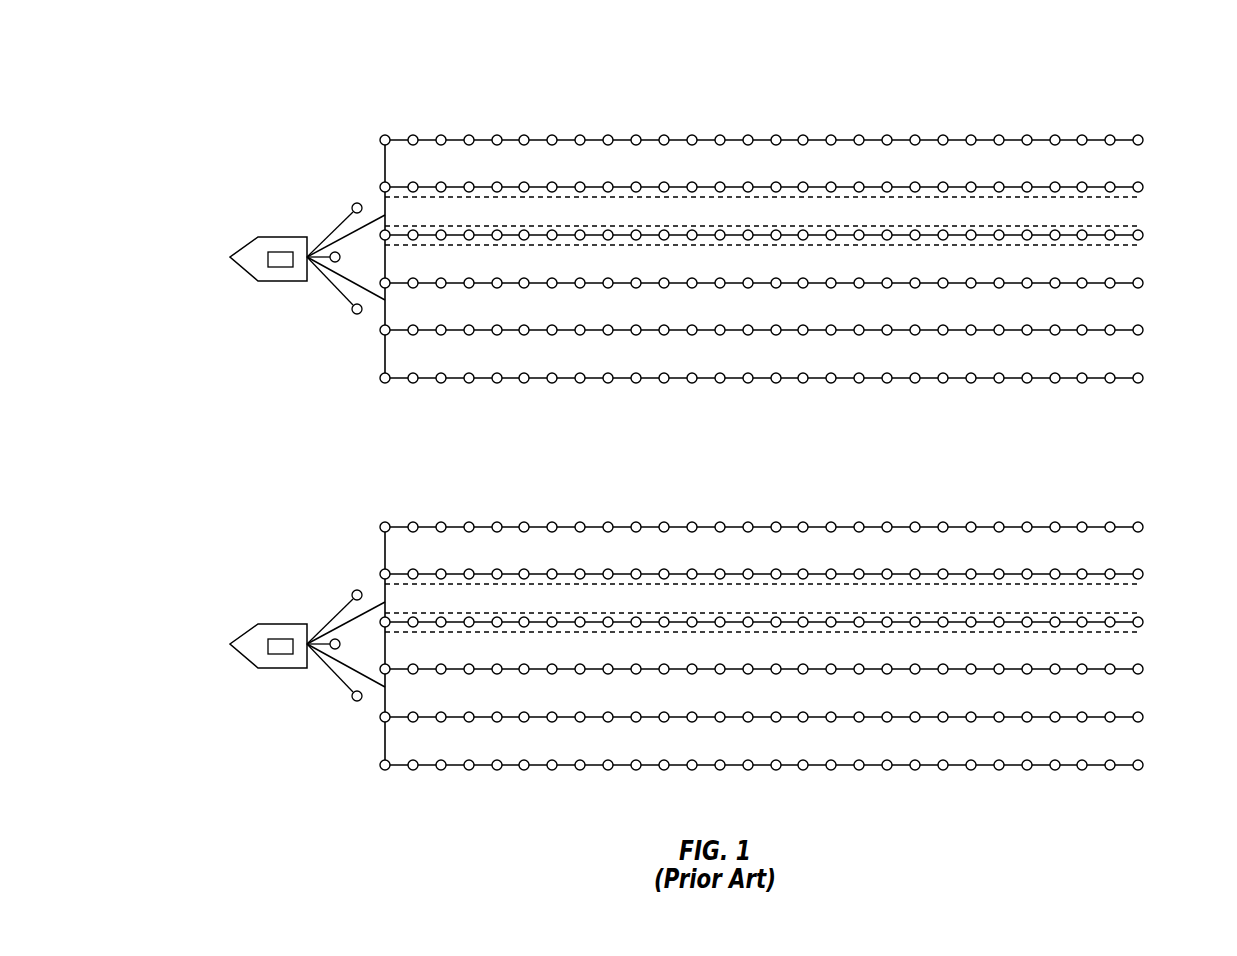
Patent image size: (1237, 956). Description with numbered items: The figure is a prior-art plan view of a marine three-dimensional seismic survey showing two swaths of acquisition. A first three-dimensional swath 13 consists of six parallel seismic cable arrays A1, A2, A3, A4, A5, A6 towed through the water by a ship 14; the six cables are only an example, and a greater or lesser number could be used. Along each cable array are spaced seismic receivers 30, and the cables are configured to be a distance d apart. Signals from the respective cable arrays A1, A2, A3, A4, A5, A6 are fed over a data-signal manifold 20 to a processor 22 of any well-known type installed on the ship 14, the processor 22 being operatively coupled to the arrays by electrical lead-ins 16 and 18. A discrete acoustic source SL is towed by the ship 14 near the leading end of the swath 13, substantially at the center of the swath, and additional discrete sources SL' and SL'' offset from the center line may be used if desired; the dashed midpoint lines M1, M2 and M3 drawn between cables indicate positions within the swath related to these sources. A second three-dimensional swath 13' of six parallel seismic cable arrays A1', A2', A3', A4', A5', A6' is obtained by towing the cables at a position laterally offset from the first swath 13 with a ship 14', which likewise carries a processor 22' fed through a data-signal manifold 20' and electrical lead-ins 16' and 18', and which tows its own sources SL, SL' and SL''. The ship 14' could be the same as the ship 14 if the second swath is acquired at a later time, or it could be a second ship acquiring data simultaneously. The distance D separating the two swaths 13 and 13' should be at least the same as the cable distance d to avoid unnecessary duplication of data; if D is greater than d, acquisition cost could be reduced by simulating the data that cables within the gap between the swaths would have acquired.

The first 3-D swath 13 is at (730, 209).
The second 3-D swath 13' is at (728, 605).
The ship 14 is at (256, 256).
The ship 14' is at (251, 642).
The electrical lead-in 16 is at (331, 228).
The electrical lead-in 16' is at (323, 615).
The electrical lead-in 18 is at (327, 286).
The electrical lead-in 18' is at (324, 674).
The data-signal manifold 20 is at (351, 253).
The data-signal manifold 20' is at (349, 639).
The processor 22 is at (255, 277).
The processor 22' is at (253, 664).
The seismic receivers 30 is at (609, 135).
The seismic cable array A1 is at (761, 125).
The seismic cable array A2 is at (761, 172).
The seismic cable array A3 is at (761, 254).
The seismic cable array A4 is at (761, 268).
The seismic cable array A5 is at (761, 315).
The seismic cable array A6 is at (761, 363).
The seismic cable array A1' is at (761, 508).
The seismic cable array A2' is at (761, 555).
The seismic cable array A3' is at (761, 640).
The seismic cable array A4' is at (761, 650).
The seismic cable array A5' is at (761, 698).
The seismic cable array A6' is at (761, 746).
The midpoint line 1 M1 is at (935, 583).
The midpoint line 2 M2 is at (1070, 583).
The midpoint line 3 M3 is at (908, 649).
The discrete acoustic source SL is at (344, 452).
The discrete acoustic source SL' is at (329, 406).
The discrete acoustic source SL'' is at (327, 496).
The distance between cables d is at (1145, 138).
The distance between swaths D is at (1138, 395).